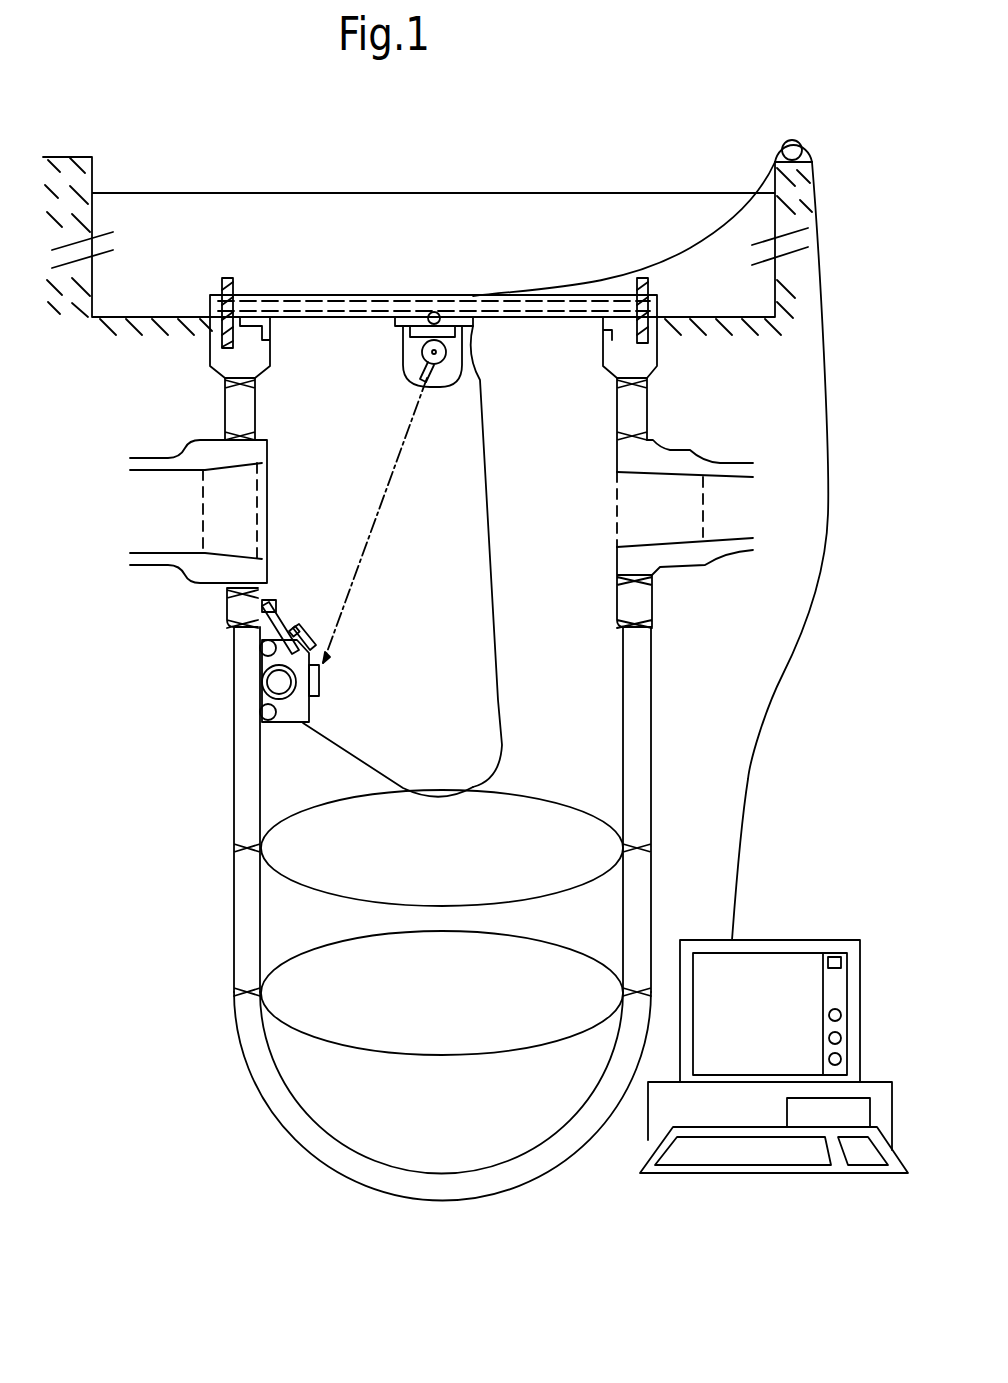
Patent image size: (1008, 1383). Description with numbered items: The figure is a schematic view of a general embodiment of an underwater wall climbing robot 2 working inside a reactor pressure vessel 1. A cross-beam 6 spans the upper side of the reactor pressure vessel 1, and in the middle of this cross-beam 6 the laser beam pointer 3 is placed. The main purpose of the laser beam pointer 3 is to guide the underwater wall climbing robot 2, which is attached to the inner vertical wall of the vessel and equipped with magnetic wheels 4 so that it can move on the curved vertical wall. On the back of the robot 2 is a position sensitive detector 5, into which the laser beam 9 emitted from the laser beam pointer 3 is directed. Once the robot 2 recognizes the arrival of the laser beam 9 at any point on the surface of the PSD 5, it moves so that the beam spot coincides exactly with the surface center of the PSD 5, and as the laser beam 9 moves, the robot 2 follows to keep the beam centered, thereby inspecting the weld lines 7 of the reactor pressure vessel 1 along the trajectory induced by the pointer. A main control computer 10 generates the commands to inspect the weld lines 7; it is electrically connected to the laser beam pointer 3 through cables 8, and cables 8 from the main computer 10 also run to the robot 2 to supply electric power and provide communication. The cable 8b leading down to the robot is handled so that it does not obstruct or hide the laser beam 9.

The reactor pressure vessel 1 is at (233, 688).
The underwater wall climbing robot 2 is at (292, 722).
The laser beam pointer 3 is at (465, 350).
The magnetic wheels 4 is at (258, 735).
The position sensitive detector (PSD) 5 is at (319, 688).
The cross-beam 6 is at (250, 295).
The weld lines 7 is at (583, 812).
The cables 8 is at (785, 676).
The cable 8b is at (498, 647).
The laser beam 9 is at (388, 485).
The main control computer 10 is at (780, 940).